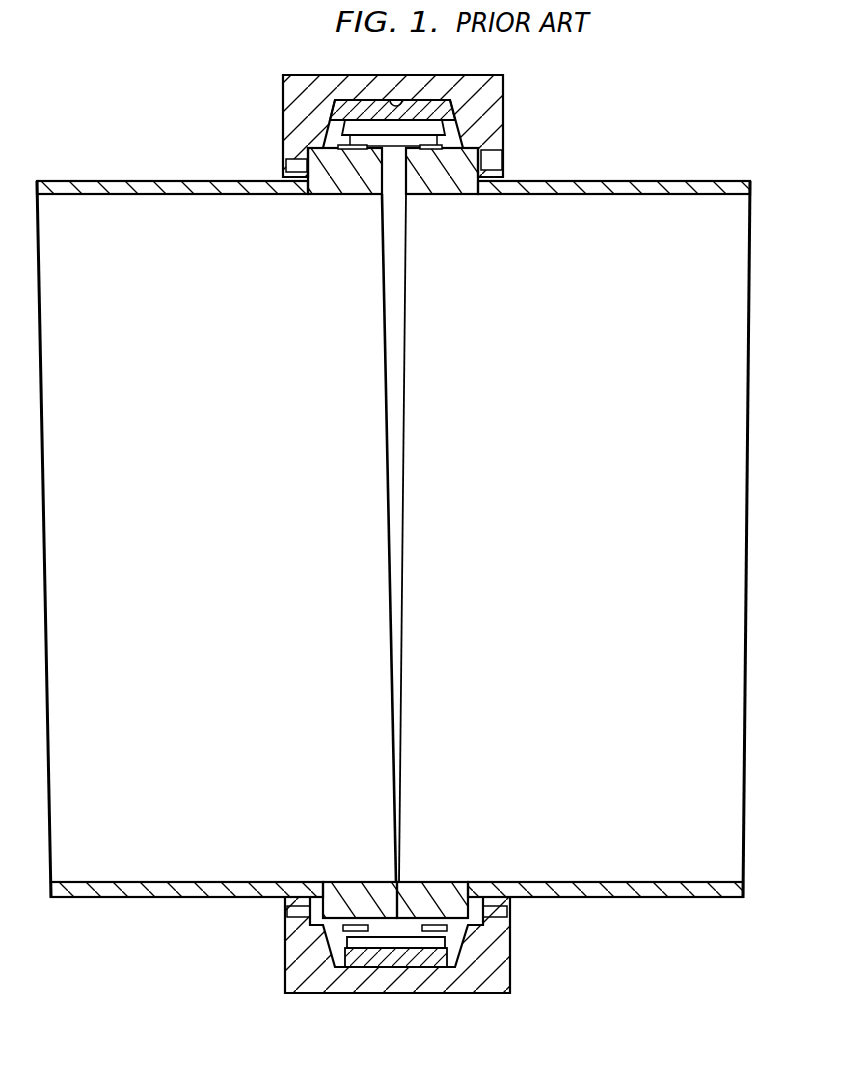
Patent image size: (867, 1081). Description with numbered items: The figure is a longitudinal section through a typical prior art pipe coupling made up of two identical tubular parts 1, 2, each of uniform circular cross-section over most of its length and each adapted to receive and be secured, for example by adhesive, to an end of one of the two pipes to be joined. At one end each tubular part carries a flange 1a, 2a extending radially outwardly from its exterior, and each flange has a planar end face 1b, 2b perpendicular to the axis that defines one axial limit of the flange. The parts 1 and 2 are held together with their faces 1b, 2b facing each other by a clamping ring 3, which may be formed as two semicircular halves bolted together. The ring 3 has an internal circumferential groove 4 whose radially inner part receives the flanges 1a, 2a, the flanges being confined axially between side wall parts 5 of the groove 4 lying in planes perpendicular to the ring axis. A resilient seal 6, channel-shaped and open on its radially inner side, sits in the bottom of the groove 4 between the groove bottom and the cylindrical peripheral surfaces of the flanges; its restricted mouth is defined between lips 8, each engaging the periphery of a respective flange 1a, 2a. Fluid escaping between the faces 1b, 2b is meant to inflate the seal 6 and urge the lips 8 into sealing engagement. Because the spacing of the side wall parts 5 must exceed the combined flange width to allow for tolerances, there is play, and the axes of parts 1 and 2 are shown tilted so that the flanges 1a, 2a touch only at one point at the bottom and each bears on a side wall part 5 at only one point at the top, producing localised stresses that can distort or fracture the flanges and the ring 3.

The tubular part 1 is at (146, 882).
The tubular part 2 is at (606, 882).
The flange 1a is at (339, 912).
The planar end face 1b is at (384, 160).
The flange 2a is at (447, 905).
The planar end face 2b is at (398, 160).
The clamping ring 3 is at (478, 102).
The internal circumferential groove 4 is at (399, 100).
The side wall parts 5 is at (303, 165).
The resilient seal 6 is at (355, 110).
The lips 8 is at (350, 150).